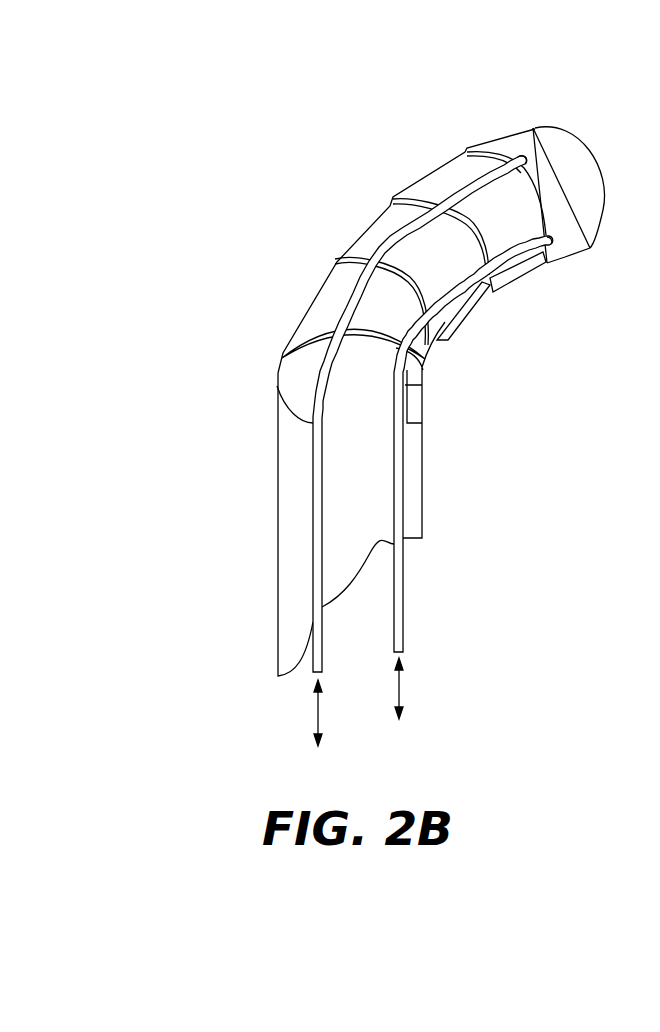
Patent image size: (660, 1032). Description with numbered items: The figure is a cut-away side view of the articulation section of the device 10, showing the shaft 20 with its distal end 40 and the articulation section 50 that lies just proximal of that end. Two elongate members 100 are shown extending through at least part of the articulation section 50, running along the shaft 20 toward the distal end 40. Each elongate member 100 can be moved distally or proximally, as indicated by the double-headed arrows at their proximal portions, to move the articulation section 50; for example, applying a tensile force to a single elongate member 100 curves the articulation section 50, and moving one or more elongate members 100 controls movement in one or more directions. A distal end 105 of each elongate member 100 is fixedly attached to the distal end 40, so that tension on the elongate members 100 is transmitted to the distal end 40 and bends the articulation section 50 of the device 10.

The device 10 is at (399, 394).
The shaft 20 is at (240, 477).
The distal end 40 is at (610, 129).
The articulation section 50 is at (357, 148).
The elongate members 100 is at (277, 386).
The distal end of elongate member 105 is at (524, 144).